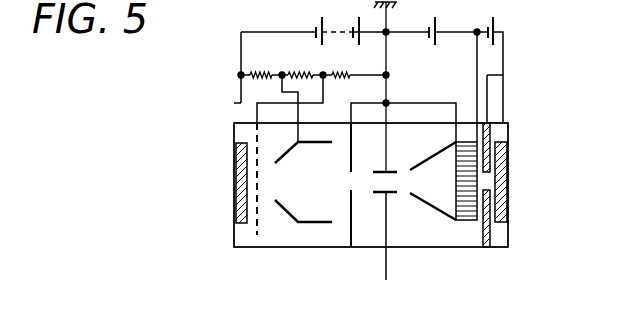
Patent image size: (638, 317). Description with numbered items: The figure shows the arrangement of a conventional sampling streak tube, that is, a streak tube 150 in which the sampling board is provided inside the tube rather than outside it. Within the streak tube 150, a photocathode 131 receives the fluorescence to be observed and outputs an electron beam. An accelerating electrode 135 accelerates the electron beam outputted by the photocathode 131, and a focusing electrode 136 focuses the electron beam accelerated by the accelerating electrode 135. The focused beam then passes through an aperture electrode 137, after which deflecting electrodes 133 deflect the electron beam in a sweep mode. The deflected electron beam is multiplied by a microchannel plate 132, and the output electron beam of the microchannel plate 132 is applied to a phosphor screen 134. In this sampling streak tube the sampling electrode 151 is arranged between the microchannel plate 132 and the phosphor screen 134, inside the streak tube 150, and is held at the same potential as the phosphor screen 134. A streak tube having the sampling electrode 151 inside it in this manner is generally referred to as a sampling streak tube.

The photocathode 131 is at (236, 148).
The microchannel plate 132 is at (467, 222).
The deflecting electrodes 133 is at (397, 195).
The phosphor screen 134 is at (507, 153).
The accelerating electrode 135 is at (255, 236).
The focusing electrode 136 is at (317, 223).
The aperture electrode 137 is at (353, 247).
The streak tube 150 is at (276, 248).
The sampling electrode 151 is at (487, 248).